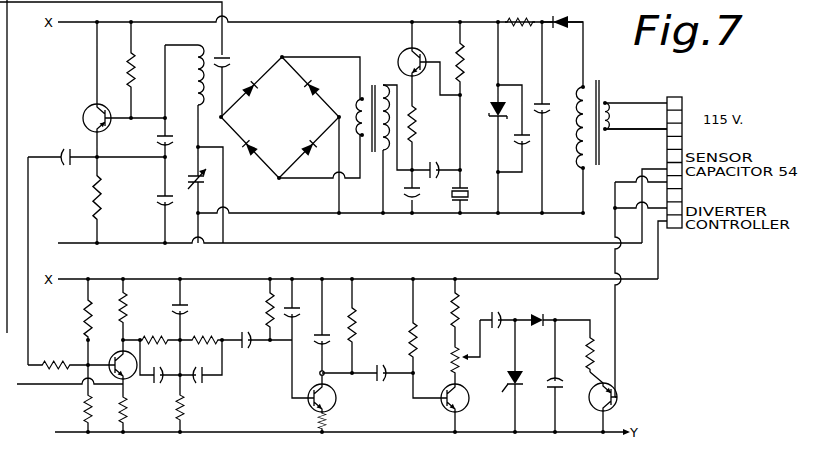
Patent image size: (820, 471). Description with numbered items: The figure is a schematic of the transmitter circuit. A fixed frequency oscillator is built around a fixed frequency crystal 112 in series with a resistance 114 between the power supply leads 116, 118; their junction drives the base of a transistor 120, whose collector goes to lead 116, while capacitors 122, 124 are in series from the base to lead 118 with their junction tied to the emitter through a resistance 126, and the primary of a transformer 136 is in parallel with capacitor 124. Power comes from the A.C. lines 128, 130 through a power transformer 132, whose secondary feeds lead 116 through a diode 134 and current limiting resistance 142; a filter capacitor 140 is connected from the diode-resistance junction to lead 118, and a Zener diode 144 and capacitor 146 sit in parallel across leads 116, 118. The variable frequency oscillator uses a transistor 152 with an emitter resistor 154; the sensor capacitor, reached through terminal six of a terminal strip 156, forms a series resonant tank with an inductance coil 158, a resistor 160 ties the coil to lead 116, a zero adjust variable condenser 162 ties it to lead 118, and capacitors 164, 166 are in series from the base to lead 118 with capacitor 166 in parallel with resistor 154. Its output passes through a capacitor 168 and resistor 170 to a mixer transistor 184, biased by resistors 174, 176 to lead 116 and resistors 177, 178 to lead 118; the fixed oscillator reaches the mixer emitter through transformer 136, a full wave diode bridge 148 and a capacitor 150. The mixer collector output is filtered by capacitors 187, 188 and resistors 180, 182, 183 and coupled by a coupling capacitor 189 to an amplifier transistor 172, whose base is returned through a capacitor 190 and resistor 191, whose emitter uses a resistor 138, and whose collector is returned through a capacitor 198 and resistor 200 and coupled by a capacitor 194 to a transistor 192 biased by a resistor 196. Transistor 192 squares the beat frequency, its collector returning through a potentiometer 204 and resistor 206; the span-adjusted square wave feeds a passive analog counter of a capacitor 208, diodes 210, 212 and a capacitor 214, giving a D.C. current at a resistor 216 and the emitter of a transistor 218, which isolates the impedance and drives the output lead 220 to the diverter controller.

The fixed frequency crystal 112 is at (492, 168).
The resistance 114 is at (463, 60).
The power supply output lead 116 is at (137, 22).
The power supply output lead 118 is at (527, 200).
The transistor 120 is at (404, 52).
The capacitor 122 is at (445, 150).
The capacitor 124 is at (420, 200).
The resistance 126 is at (416, 122).
The A.C. line 128 is at (612, 102).
The A.C. line 130 is at (610, 135).
The power transformer 132 is at (600, 85).
The diode 134 is at (565, 22).
The transformer 136 is at (380, 84).
The resistor 138 is at (328, 420).
The filter capacitor 140 is at (545, 104).
The current limiting resistance 142 is at (510, 22).
The Zener diode 144 is at (492, 120).
The capacitor 146 is at (528, 145).
The full wave diode bridge 148 is at (302, 140).
The capacitor 150 is at (229, 60).
The transistor 152 is at (86, 110).
The emitter resistor 154 is at (94, 192).
The terminal strip 156 is at (673, 97).
The inductance coil 158 is at (198, 45).
The resistor 160 is at (128, 70).
The zero adjust variable condenser 162 is at (188, 180).
The capacitor 164 is at (157, 140).
The capacitor 166 is at (157, 203).
The capacitor 168 is at (64, 150).
The resistor 170 is at (65, 360).
The amplifier transistor 172 is at (310, 408).
The resistor 174 is at (85, 318).
The resistor 176 is at (128, 306).
The resistor 177 is at (84, 397).
The resistor 178 is at (128, 410).
The resistor 180 is at (158, 338).
The resistor 182 is at (205, 337).
The resistor 183 is at (186, 408).
The mixer transistor 184 is at (118, 352).
The capacitor 187 is at (185, 305).
The capacitor 188 is at (205, 380).
The coupling capacitor 189 is at (246, 348).
The capacitor 190 is at (297, 305).
The resistor 191 is at (268, 300).
The transistor 192 is at (442, 408).
The capacitor 194 is at (375, 380).
The resistor 196 is at (410, 340).
The capacitor 198 is at (328, 332).
The resistor 200 is at (358, 322).
The potentiometer 204 is at (450, 360).
The resistor 206 is at (452, 310).
The capacitor 208 is at (495, 312).
The diode 210 is at (507, 386).
The diode 212 is at (535, 326).
The capacitor 214 is at (550, 390).
The resistor 216 is at (593, 352).
The transistor 218 is at (617, 398).
The output lead 220 is at (615, 317).